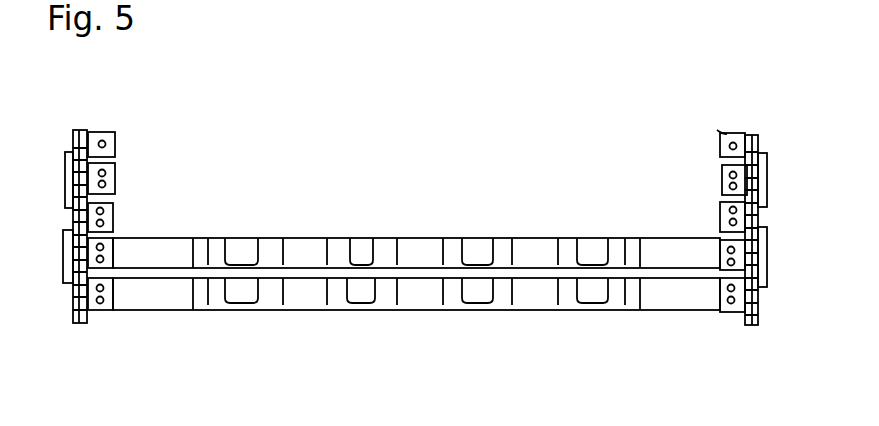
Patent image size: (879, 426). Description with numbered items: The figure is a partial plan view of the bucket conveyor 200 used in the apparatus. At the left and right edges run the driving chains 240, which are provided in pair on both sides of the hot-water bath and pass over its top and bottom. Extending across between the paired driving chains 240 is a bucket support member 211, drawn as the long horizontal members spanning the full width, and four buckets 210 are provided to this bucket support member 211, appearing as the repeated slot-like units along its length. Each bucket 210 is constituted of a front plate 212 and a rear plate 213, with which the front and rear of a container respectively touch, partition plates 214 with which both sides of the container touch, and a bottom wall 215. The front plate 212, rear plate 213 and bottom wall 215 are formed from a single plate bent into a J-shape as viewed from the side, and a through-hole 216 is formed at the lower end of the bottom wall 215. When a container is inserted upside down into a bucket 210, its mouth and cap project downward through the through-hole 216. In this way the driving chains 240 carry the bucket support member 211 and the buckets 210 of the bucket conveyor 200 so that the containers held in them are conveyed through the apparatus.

The bucket conveyor 200 is at (574, 186).
The bucket 210 is at (257, 228).
The bucket support member 211 is at (145, 252).
The front plate 212 is at (219, 240).
The rear plate 213 is at (221, 268).
The partition plate 214 is at (205, 265).
The bottom wall 215 is at (268, 263).
The through-hole 216 is at (248, 253).
The driving chain 240 is at (73, 148).